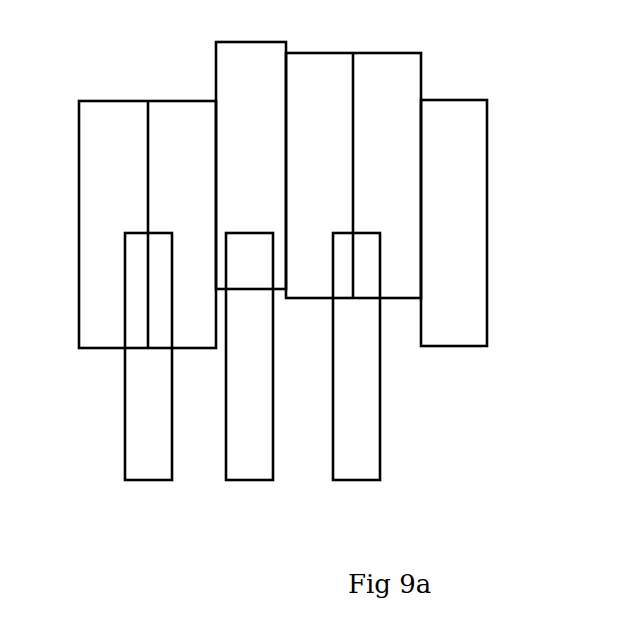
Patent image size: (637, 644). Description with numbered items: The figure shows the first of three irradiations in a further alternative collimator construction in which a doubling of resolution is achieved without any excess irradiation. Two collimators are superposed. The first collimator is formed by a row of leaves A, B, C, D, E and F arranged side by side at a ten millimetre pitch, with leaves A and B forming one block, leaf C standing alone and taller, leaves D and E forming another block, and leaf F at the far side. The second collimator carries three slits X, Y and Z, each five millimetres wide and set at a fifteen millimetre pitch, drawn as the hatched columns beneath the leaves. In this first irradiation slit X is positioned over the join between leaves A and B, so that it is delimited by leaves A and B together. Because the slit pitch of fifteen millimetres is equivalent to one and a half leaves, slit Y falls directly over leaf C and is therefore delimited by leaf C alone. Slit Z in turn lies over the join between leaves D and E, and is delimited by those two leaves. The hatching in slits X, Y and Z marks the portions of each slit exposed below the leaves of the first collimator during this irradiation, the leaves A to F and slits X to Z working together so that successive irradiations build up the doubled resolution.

The leaf A is at (147, 224).
The leaf B is at (169, 224).
The leaf C is at (251, 165).
The leaf D is at (353, 175).
The leaf E is at (371, 175).
The leaf F is at (454, 223).
The slit X is at (155, 416).
The slit Y is at (256, 385).
The slit Z is at (363, 391).